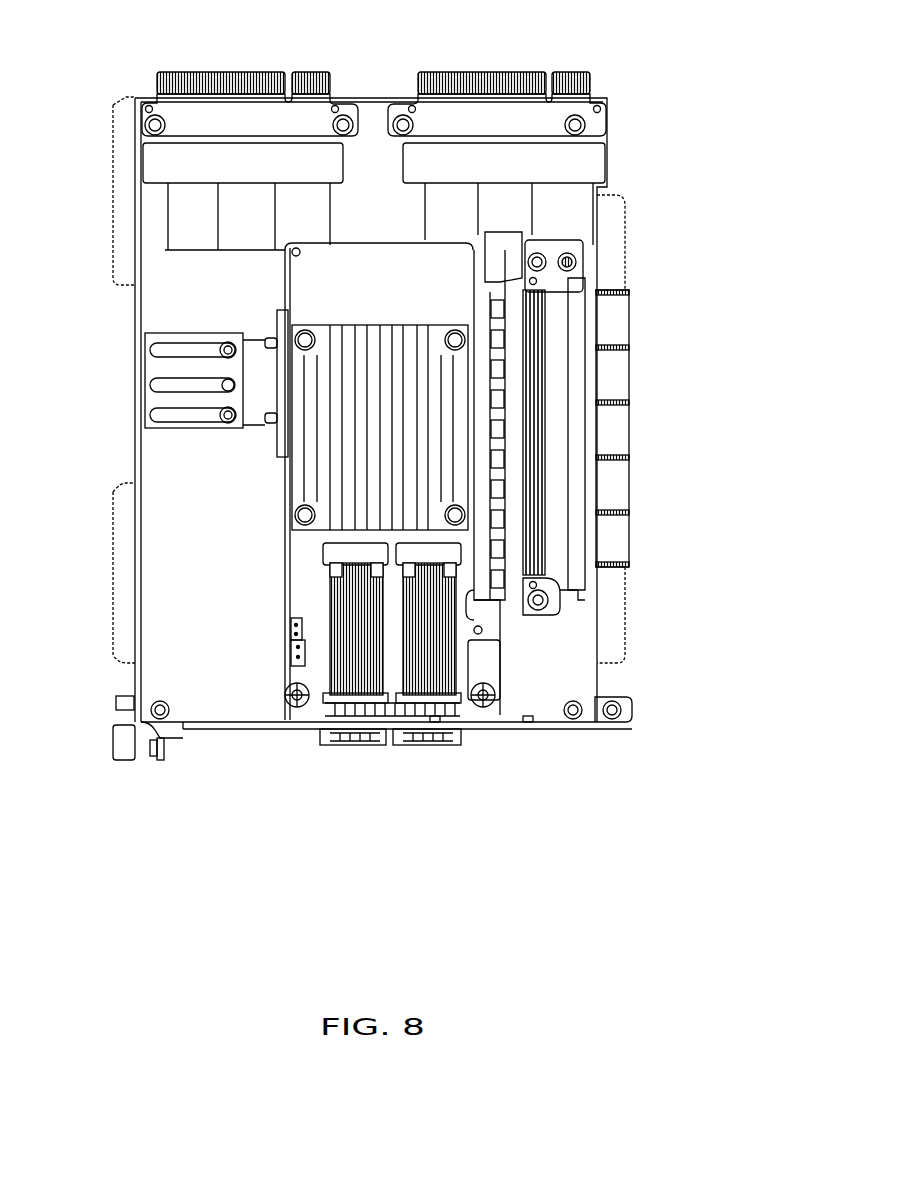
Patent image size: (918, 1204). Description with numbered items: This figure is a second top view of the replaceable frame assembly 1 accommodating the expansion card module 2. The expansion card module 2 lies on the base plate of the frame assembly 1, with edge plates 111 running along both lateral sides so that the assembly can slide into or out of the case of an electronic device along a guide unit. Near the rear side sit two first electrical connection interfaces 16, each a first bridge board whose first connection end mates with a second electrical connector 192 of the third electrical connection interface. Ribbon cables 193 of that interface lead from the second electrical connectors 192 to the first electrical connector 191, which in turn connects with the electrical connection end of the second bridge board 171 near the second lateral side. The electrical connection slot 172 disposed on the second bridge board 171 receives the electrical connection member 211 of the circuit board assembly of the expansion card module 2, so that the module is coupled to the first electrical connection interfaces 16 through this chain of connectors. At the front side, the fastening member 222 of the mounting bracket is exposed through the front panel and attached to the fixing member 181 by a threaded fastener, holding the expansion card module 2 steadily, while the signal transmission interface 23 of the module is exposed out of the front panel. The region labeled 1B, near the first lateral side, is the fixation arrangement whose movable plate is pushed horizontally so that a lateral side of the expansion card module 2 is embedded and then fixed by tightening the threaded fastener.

The replaceable frame assembly 1 is at (640, 712).
The edge plate 111 is at (114, 128).
The first electrical connection interface 16 is at (350, 100).
The second electrical connector 192 is at (148, 153).
The ribbon cable 193 is at (172, 232).
The first electrical connector 191 is at (600, 262).
The electrical connection member 211 is at (487, 322).
The expansion card module 2 is at (280, 560).
The bracket 1B is at (245, 325).
The electrical connection slot 172 is at (515, 602).
The second bridge board 171 is at (555, 604).
The fixing member 181 is at (158, 762).
The fastening member 222 is at (163, 762).
The signal transmission interface 23 is at (385, 747).